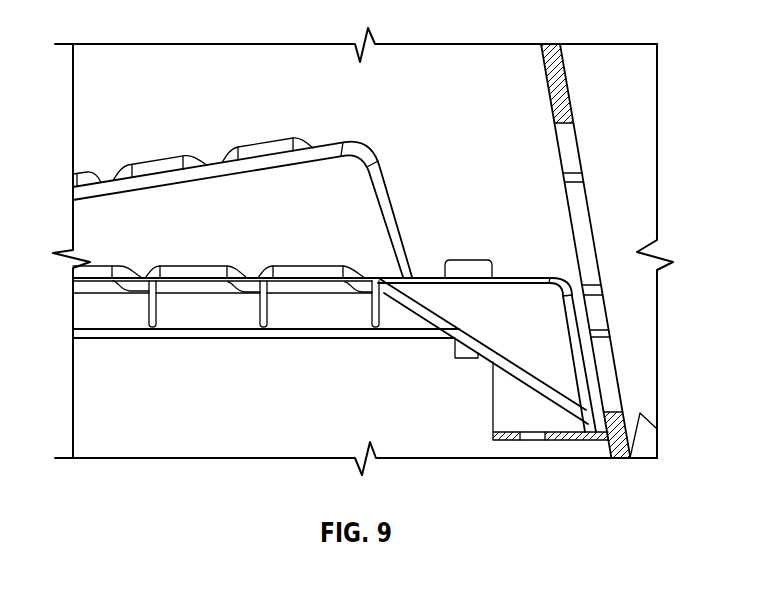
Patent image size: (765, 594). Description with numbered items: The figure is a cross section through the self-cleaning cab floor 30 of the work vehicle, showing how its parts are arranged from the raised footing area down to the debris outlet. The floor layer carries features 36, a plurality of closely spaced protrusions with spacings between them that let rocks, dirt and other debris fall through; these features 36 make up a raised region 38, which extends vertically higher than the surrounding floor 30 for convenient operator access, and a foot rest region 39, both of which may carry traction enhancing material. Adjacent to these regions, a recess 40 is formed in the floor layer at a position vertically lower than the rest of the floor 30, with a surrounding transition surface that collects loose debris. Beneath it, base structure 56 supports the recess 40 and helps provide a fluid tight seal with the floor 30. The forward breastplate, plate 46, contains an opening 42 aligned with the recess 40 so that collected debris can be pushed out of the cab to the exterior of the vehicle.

The floor 30 is at (422, 91).
The features 36 is at (297, 263).
The region 38 is at (366, 249).
The foot rest region 39 is at (309, 109).
The recess 40 is at (538, 307).
The opening 42 is at (581, 213).
The plate 46 is at (566, 83).
The base structure 56 is at (515, 443).